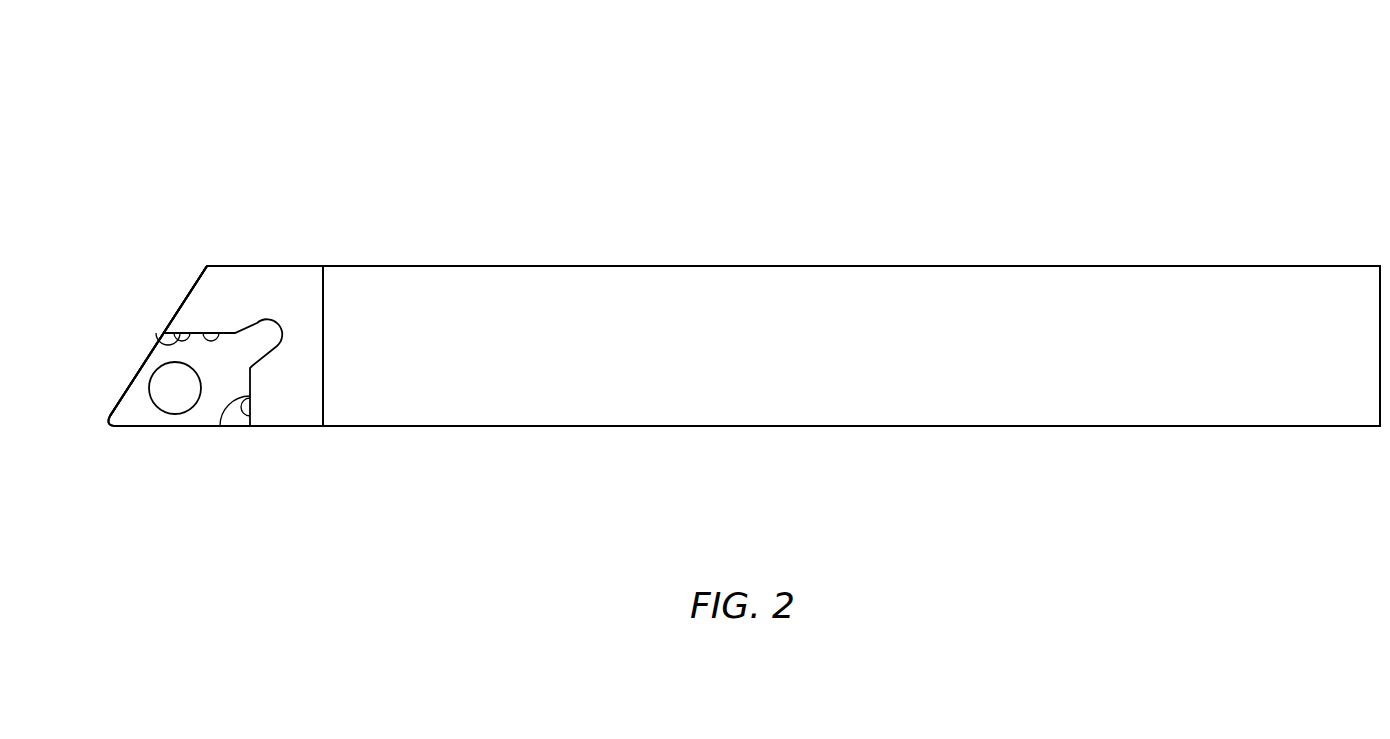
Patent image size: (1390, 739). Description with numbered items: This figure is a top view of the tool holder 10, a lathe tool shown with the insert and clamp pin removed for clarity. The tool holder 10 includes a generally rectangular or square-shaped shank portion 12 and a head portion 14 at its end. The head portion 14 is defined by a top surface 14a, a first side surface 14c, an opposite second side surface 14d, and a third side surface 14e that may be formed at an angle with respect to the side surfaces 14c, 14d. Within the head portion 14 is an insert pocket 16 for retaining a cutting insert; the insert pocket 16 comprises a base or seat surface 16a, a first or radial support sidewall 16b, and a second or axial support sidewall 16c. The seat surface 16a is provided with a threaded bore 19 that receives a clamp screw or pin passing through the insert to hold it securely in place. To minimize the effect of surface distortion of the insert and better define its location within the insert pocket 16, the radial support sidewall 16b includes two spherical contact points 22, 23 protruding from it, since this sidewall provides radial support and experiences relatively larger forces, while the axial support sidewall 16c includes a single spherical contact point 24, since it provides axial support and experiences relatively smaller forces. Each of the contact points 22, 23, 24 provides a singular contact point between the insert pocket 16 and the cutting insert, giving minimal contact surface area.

The tool holder 10 is at (719, 268).
The shank portion 12 is at (1174, 248).
The head portion 14 is at (245, 320).
The top surface 14a is at (242, 278).
The first side surface 14c is at (265, 265).
The second side surface 14d is at (307, 426).
The third side surface 14e is at (200, 276).
The insert pocket 16 is at (180, 389).
The seat surface 16a is at (135, 397).
The radial support sidewall 16b is at (157, 347).
The axial support sidewall 16c is at (236, 428).
The threaded bore 19 is at (165, 400).
The spherical contact point 22 is at (150, 352).
The spherical contact point 23 is at (178, 340).
The spherical contact point 24 is at (247, 397).